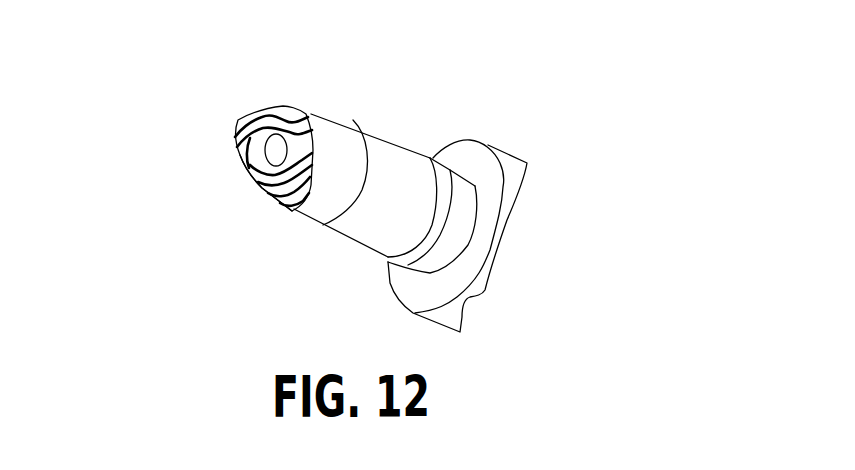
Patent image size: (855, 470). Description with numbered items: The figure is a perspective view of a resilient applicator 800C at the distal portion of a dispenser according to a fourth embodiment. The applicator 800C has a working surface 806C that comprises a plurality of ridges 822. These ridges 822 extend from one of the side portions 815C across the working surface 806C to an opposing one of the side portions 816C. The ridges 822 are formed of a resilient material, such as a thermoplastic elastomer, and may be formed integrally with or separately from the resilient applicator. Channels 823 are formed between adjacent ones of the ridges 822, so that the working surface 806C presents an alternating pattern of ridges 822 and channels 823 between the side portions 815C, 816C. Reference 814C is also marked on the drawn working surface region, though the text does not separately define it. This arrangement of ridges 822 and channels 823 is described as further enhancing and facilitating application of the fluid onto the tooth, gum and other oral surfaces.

The applicator 800C is at (334, 176).
The working surface 806C is at (273, 152).
The upper ridge band 814C is at (250, 118).
The side portion 815C is at (312, 160).
The side portion 816C is at (255, 178).
The ridges 822 is at (275, 113).
The channels 823 is at (237, 147).